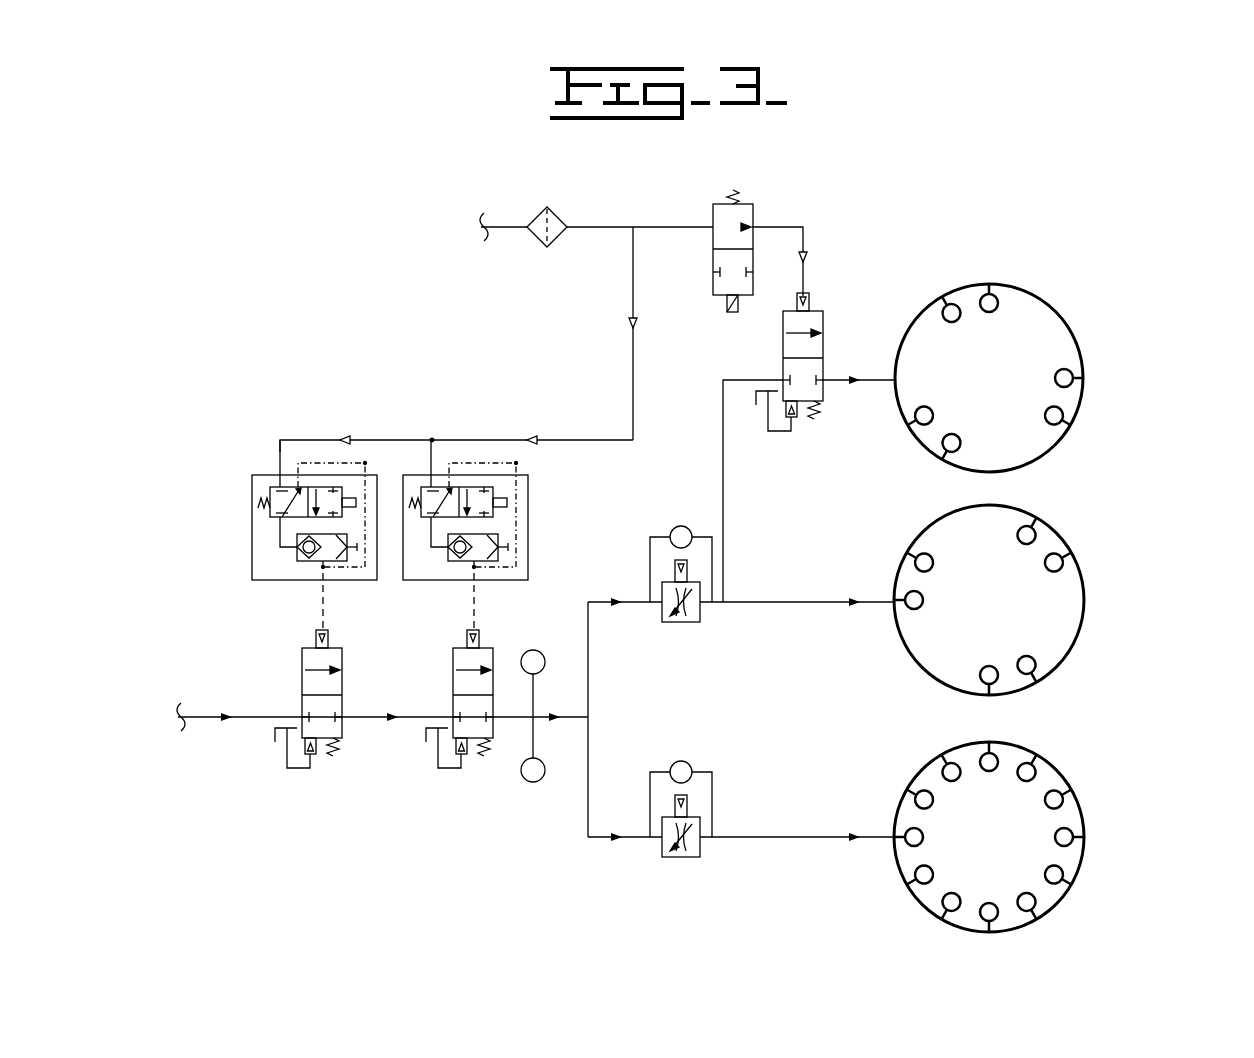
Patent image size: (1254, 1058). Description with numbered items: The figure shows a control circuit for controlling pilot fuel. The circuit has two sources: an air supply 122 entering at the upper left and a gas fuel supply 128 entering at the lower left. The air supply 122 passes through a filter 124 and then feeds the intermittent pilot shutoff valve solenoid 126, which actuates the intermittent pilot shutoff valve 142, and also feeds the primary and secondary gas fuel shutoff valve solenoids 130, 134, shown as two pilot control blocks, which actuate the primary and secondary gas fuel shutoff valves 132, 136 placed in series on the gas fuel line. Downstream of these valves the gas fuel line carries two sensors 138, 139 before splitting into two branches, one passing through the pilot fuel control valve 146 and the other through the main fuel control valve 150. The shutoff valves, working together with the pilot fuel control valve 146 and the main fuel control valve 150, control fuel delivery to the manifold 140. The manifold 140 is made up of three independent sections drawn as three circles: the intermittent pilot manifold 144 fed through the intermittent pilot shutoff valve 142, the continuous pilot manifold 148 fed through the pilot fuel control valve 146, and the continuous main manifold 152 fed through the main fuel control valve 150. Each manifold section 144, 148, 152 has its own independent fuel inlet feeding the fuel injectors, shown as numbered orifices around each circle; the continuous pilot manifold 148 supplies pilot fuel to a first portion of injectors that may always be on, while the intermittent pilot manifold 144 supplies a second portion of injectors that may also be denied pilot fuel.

The air supply 122 is at (462, 214).
The filter 124 is at (540, 212).
The intermittent pilot shutoff valve solenoid 126 is at (752, 212).
The gas fuel supply 128 is at (160, 694).
The primary gas fuel shutoff valve solenoid 130 is at (262, 475).
The primary gas fuel shutoff valve 132 is at (302, 660).
The secondary gas fuel shutoff valve solenoid 134 is at (528, 487).
The secondary gas fuel shutoff valve 136 is at (453, 660).
The pressure sensor 138 is at (527, 650).
The pressure sensor 139 is at (530, 783).
The manifold 140 is at (1180, 316).
The intermittent pilot shutoff valve 142 is at (822, 320).
The intermittent pilot manifold 144 is at (1070, 298).
The pilot fuel control valve 146 is at (700, 612).
The continuous pilot manifold 148 is at (1075, 520).
The main fuel control valve 150 is at (700, 848).
The continuous main manifold 152 is at (1075, 752).